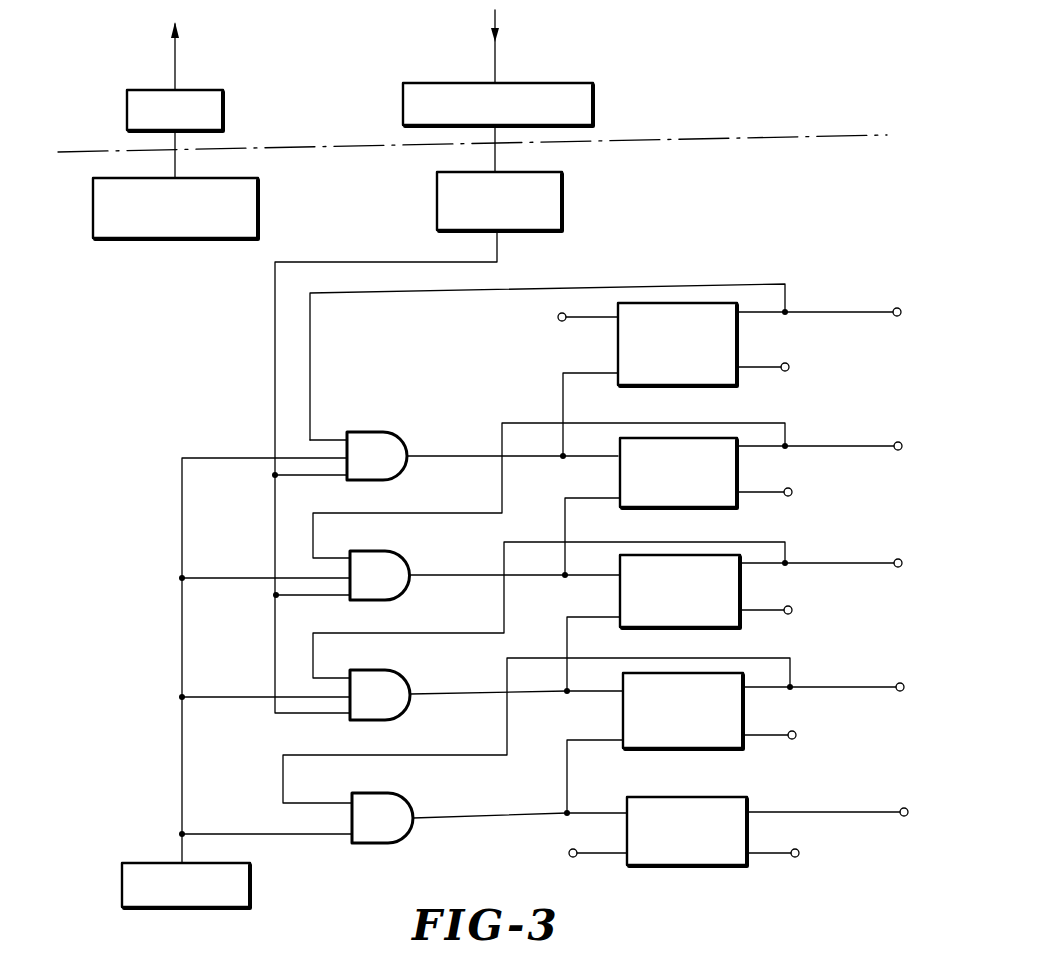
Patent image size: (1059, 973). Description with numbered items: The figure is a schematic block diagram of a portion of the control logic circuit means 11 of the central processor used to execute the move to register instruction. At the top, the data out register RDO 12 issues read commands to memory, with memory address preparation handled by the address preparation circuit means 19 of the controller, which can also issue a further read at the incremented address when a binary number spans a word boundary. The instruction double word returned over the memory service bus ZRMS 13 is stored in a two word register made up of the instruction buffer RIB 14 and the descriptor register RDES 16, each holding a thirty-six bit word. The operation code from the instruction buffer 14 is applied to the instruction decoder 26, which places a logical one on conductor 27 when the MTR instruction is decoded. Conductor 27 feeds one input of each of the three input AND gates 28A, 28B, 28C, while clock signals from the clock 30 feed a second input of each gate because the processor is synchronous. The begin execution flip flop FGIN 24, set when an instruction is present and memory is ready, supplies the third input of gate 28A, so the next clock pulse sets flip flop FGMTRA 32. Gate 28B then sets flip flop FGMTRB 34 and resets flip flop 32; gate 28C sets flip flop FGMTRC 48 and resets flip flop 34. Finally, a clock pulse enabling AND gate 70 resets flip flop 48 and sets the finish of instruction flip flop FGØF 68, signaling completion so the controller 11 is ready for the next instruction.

The control logic circuit means 11 is at (766, 137).
The data out register RDO 12 is at (224, 100).
The memory service bus ZRMS 13 is at (492, 17).
The instruction buffer RIB 14 is at (403, 94).
The descriptor register RDES 16 is at (598, 96).
The address preparation circuit means 19 is at (93, 186).
The begin execution of instruction flip flop FGIN 24 is at (710, 386).
The instruction decoder 26 is at (563, 197).
The conductor 27 is at (273, 345).
The AND gate 28A is at (378, 432).
The AND gate 28B is at (386, 551).
The AND gate 28C is at (388, 670).
The clock 30 is at (158, 863).
The flip flop FGMTRA 32 is at (724, 508).
The flip flop FGMTRB 34 is at (726, 628).
The flip flop FGMTRC 48 is at (728, 749).
The finish of instruction flip flop FGØF 68 is at (732, 866).
The AND gate 70 is at (390, 793).